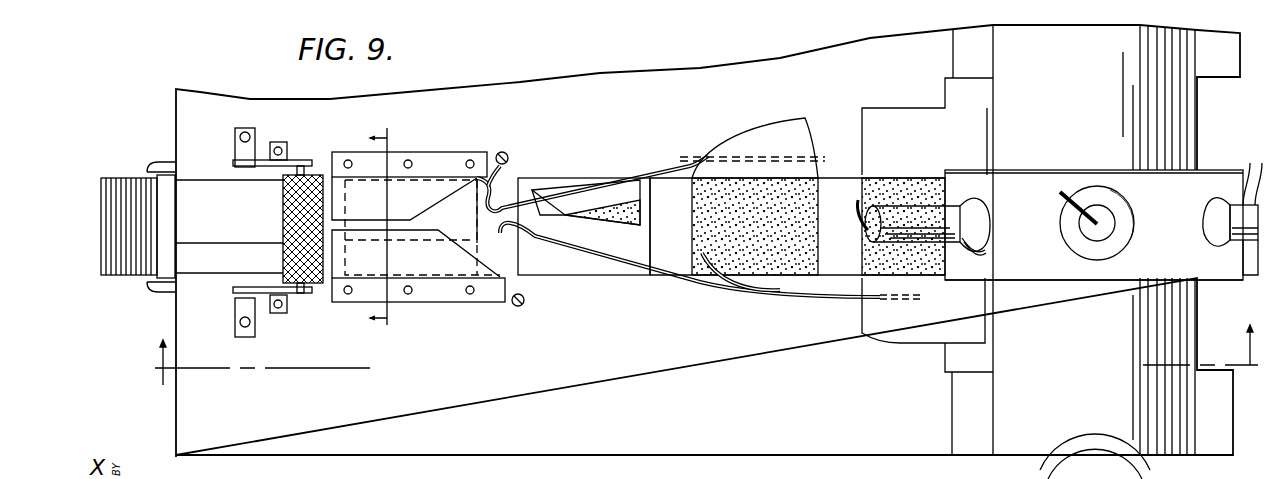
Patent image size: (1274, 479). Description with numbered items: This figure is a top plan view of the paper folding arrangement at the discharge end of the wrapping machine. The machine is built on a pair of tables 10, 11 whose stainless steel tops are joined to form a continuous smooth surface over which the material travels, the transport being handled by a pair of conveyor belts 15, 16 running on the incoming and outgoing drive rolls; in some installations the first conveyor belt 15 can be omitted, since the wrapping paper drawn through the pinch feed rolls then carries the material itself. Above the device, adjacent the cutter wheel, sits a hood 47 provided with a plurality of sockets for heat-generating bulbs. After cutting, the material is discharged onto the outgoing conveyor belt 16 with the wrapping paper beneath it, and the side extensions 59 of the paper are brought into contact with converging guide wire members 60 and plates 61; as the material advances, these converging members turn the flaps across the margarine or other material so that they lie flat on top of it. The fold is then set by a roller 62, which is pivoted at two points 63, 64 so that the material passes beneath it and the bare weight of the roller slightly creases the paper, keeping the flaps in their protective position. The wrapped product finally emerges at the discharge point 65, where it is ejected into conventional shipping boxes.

The table 10 is at (698, 340).
The table 11 is at (570, 470).
The conveyor belt 15 is at (1250, 163).
The conveyor belt 16 is at (665, 255).
The hood 47 is at (1012, 98).
The side extensions 59 is at (753, 148).
The converging guide wire members 60 is at (625, 160).
The plates 61 is at (438, 182).
The roller 62 is at (283, 203).
The pivot 63 is at (301, 166).
The pivot 64 is at (235, 150).
The discharge point 65 is at (160, 185).